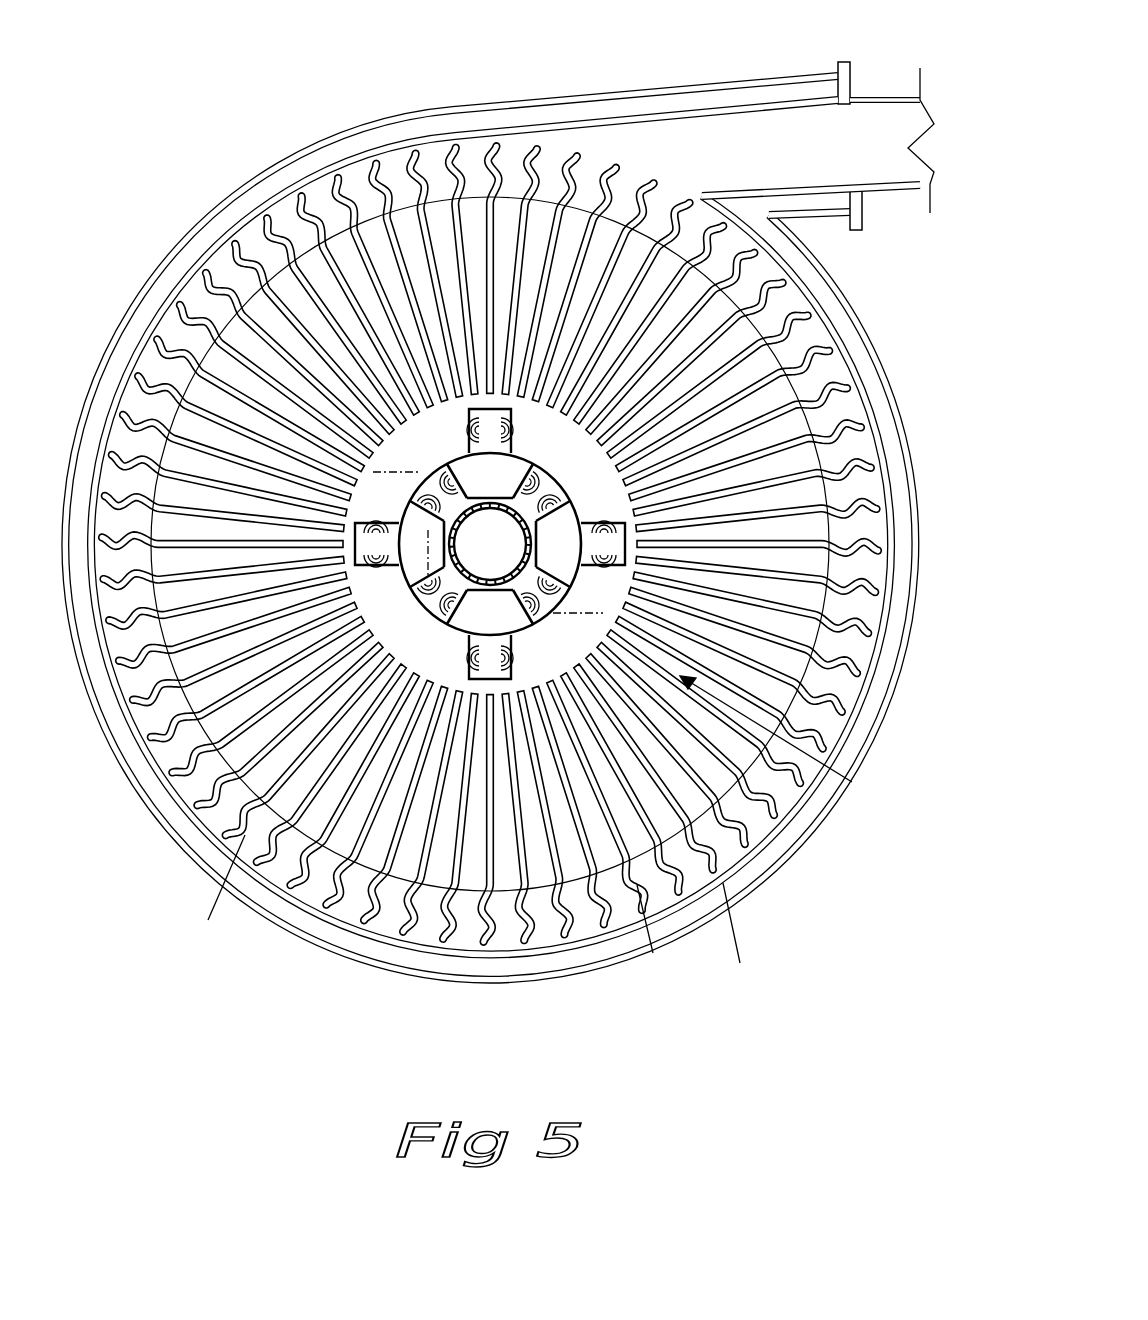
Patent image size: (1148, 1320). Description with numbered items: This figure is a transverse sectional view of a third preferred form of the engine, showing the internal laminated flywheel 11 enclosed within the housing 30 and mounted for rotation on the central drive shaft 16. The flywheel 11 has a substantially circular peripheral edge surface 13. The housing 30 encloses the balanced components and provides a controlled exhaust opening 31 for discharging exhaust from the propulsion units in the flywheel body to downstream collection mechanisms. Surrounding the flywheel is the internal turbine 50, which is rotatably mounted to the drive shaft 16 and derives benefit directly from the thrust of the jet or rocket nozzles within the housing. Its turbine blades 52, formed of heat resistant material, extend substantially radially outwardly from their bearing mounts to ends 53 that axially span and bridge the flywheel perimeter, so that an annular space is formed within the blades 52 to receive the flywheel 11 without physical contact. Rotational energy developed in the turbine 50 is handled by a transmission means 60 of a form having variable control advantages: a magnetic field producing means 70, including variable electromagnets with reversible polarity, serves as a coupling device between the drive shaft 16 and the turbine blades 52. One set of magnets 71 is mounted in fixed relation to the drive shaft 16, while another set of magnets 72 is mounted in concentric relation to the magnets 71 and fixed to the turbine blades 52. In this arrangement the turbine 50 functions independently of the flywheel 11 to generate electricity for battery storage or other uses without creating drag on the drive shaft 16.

The laminated flywheel 11 is at (305, 247).
The peripheral edge surface 13 is at (430, 890).
The drive shaft 16 is at (476, 563).
The housing 30 is at (797, 852).
The exhaust opening 31 is at (877, 147).
The internal turbine 50 is at (814, 340).
The turbine blades 52 is at (283, 918).
The blade ends 53 is at (653, 953).
The transmission means 60 is at (560, 558).
The magnetic field producing means 70 is at (852, 782).
The first set of magnets 71 is at (518, 478).
The second set of magnets 72 is at (588, 490).